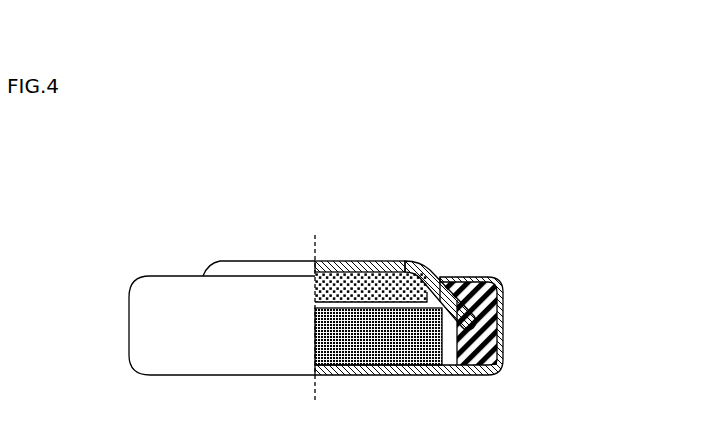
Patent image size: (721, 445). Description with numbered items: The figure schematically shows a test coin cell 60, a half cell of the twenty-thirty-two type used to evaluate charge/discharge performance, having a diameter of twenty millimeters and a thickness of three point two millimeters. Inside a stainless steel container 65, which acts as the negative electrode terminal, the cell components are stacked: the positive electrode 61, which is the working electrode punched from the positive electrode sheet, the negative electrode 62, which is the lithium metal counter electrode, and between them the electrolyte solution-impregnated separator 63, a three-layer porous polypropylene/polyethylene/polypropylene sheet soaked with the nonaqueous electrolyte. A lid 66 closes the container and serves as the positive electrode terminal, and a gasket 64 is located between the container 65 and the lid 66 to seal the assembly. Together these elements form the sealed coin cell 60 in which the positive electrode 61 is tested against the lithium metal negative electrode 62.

The coin cell 60 is at (516, 208).
The positive electrode 61 is at (370, 261).
The negative electrode 62 is at (392, 362).
The electrolyte solution-impregnated separator 63 is at (393, 306).
The gasket 64 is at (503, 304).
The container 65 is at (222, 364).
The lid 66 is at (265, 258).